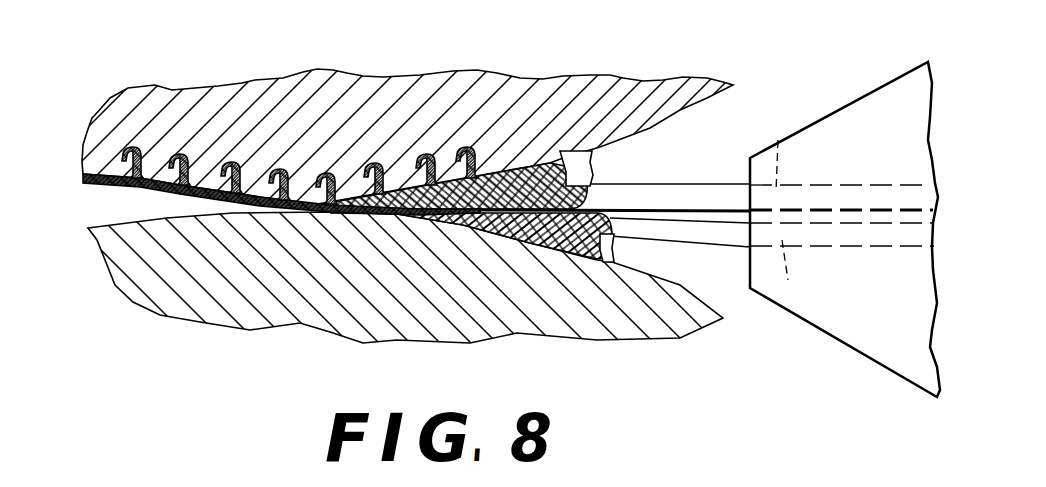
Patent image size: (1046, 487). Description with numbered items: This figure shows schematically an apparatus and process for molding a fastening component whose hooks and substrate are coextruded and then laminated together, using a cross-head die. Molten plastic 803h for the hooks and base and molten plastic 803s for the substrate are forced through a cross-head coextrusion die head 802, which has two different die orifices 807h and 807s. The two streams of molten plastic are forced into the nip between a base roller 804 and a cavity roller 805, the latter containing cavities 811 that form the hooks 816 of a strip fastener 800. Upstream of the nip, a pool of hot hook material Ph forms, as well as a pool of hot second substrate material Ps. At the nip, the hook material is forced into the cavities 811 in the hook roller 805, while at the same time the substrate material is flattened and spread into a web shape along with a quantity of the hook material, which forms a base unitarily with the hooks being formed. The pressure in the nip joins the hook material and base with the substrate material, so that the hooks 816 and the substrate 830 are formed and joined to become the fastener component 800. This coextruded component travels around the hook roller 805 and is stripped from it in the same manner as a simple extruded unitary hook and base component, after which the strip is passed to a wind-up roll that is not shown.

The strip fastener 800 is at (392, 124).
The cross-head coextrusion die head 802 is at (855, 99).
The molten plastic for hooks and base 803h is at (666, 184).
The molten plastic for substrate 803s is at (671, 238).
The base roller 804 is at (583, 318).
The cavity roller 805 is at (527, 87).
The die orifice for hook material 807h is at (778, 140).
The die orifice for substrate material 807s is at (788, 280).
The cavities 811 is at (377, 163).
The hooks 816 is at (122, 158).
The substrate 830 is at (126, 192).
The pool of hot hook material Ph is at (592, 168).
The pool of hot second substrate material Ps is at (613, 242).